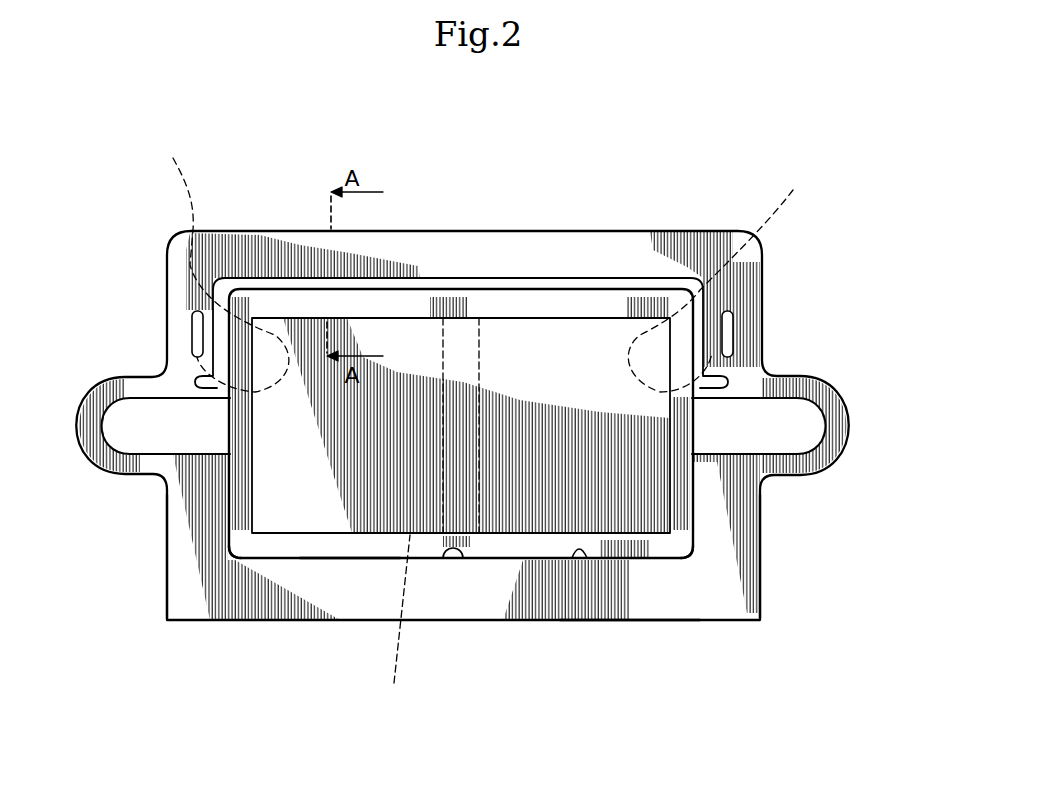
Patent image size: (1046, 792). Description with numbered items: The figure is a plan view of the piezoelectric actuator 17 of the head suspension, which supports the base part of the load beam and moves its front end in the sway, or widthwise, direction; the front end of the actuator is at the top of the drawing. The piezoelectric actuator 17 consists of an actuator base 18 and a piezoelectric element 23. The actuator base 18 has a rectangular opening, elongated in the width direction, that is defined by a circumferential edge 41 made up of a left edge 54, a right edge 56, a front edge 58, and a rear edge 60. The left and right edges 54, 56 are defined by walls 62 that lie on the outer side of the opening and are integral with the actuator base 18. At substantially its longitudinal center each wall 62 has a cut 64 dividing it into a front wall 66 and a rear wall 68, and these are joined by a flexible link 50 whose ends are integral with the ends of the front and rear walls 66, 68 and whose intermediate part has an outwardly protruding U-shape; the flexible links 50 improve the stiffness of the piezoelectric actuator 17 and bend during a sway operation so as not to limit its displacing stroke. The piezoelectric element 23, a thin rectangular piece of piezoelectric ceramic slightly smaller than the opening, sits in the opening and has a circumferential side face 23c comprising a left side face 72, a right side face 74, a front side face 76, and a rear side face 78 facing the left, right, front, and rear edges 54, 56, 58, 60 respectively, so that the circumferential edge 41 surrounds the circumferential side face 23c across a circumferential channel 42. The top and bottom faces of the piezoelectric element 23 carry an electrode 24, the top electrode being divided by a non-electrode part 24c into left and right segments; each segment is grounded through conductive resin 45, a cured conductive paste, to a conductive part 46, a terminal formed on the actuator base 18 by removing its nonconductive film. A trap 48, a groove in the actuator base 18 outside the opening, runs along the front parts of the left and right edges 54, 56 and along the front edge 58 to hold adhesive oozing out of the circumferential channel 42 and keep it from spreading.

The piezoelectric actuator 17 is at (691, 103).
The actuator base 18 is at (651, 232).
The piezoelectric element 23 is at (420, 340).
The circumferential side face 23c is at (505, 318).
The electrode 24 is at (530, 500).
The non-electrode part 24c is at (397, 624).
The circumferential edge 41 is at (457, 560).
The circumferential channel 42 is at (620, 548).
The conductive resin 45 is at (485, 263).
The conductive part 46 is at (194, 334).
The trap 48 is at (533, 279).
The flexible link 50 is at (96, 468).
The left edge 54 is at (233, 560).
The right edge 56 is at (683, 507).
The front edge 58 is at (591, 292).
The rear edge 60 is at (578, 560).
The wall 62 is at (164, 517).
The cut 64 is at (185, 430).
The front wall 66 is at (180, 286).
The rear wall 68 is at (186, 562).
The left side face 72 is at (250, 460).
The right side face 74 is at (686, 500).
The front side face 76 is at (623, 318).
The rear side face 78 is at (347, 560).